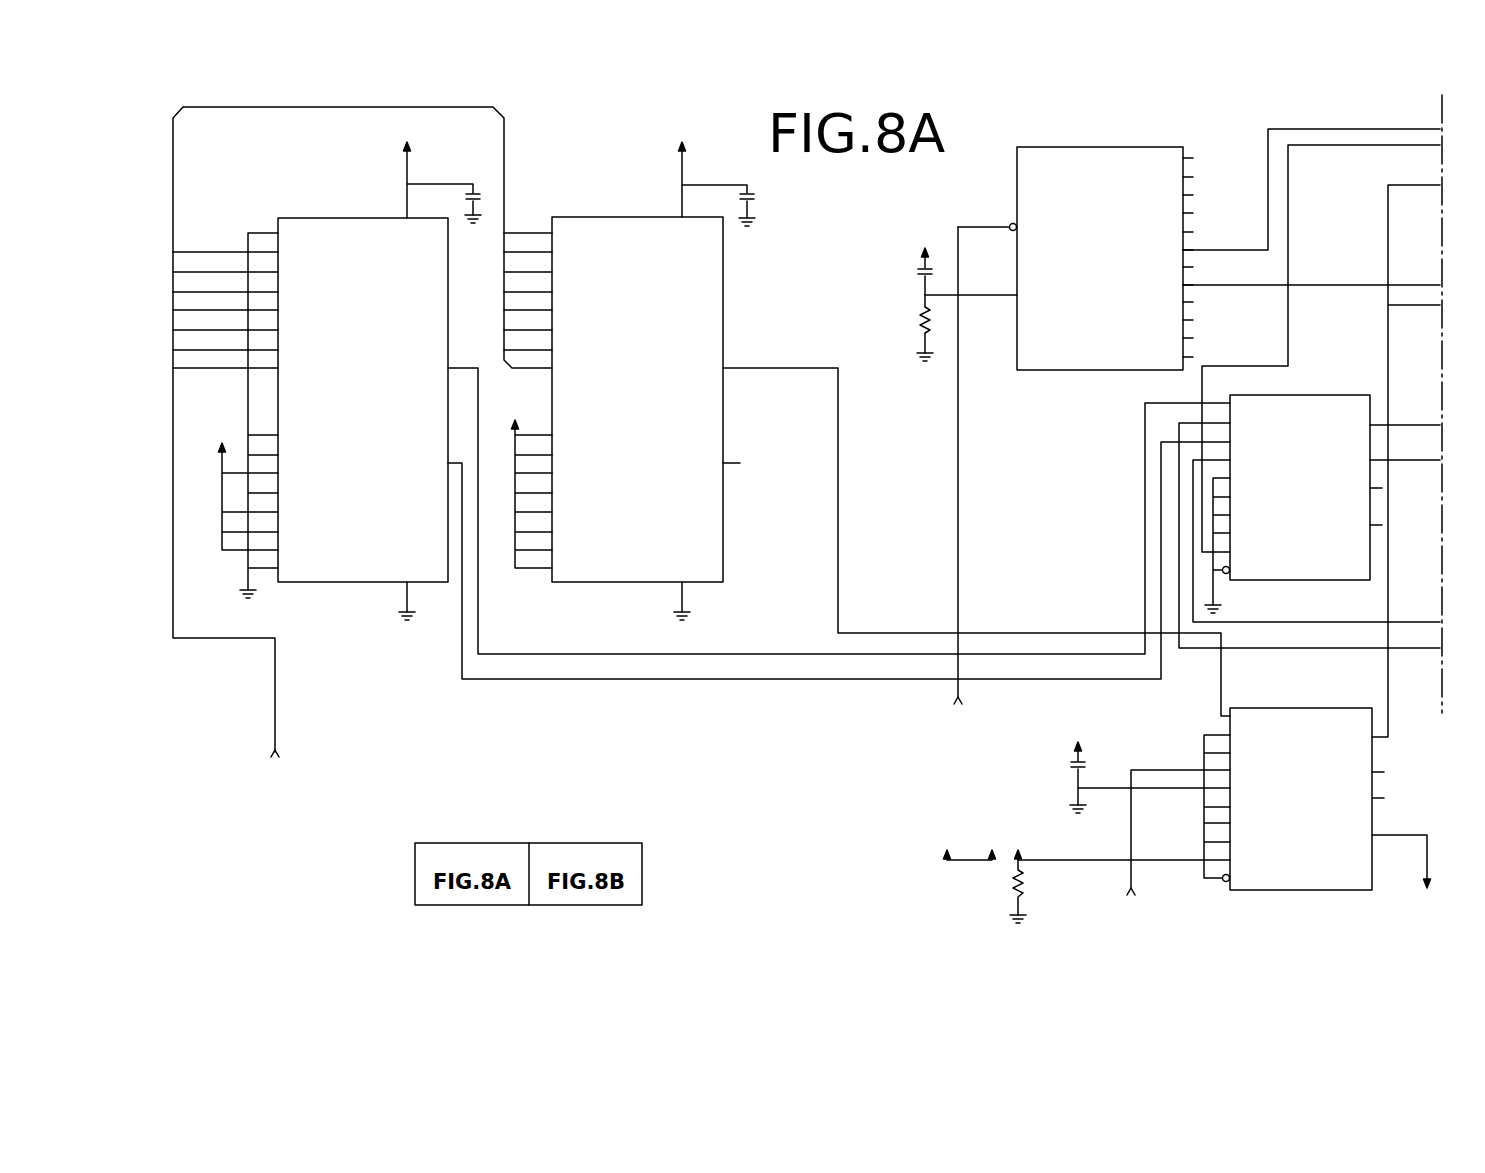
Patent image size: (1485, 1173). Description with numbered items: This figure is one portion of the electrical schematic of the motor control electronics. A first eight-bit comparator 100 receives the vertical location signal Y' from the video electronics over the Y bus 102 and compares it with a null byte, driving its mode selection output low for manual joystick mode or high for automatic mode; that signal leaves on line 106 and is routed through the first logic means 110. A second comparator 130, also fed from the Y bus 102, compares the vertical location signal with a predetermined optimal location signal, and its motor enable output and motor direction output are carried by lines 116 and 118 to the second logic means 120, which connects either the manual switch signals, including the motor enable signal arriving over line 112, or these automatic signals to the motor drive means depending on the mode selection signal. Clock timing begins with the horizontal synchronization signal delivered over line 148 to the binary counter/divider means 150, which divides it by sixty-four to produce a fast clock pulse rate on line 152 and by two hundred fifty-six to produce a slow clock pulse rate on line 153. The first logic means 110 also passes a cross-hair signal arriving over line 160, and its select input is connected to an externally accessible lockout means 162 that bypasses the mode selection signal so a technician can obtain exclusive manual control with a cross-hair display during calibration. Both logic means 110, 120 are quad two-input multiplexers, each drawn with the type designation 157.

The first 8-bit comparator 100 is at (621, 421).
The Y bus 102 is at (275, 712).
The line 106 is at (1000, 633).
The first logic means 110 is at (1316, 882).
The line 112 is at (1312, 650).
The line 116 is at (593, 653).
The line 118 is at (612, 680).
The second logic means 120 is at (1302, 566).
The second comparator 130 is at (346, 421).
The line 148 is at (959, 455).
The binary counter/divider means 150 is at (1083, 355).
The line 152 is at (1290, 128).
The line 153 is at (1268, 288).
The switch 157 is at (1277, 690).
The line 160 is at (1131, 818).
The lockout means 162 is at (1018, 848).